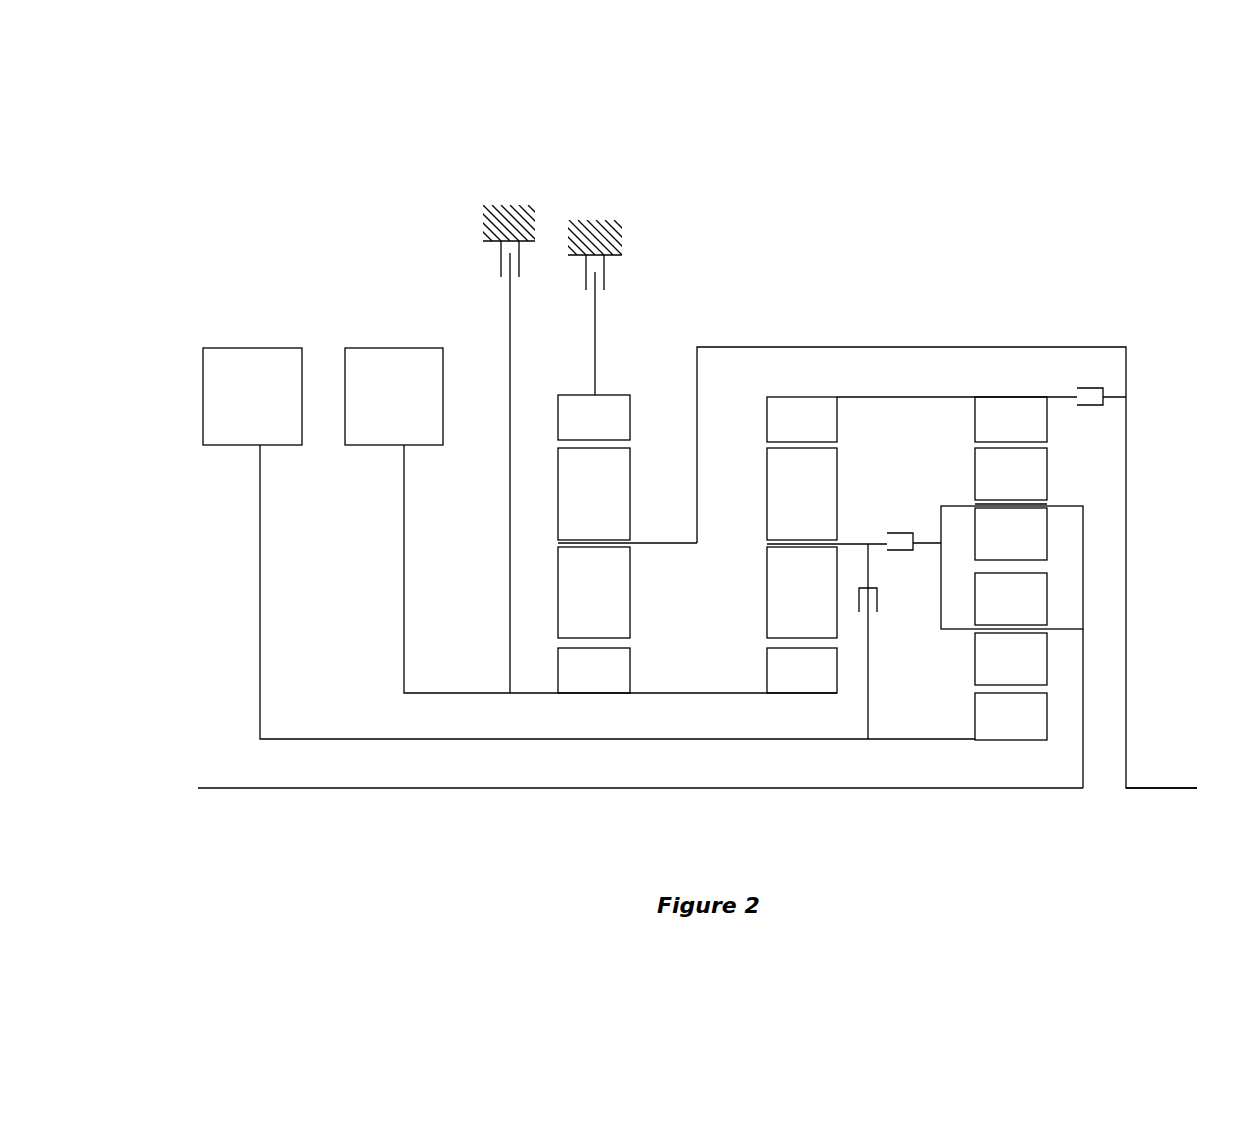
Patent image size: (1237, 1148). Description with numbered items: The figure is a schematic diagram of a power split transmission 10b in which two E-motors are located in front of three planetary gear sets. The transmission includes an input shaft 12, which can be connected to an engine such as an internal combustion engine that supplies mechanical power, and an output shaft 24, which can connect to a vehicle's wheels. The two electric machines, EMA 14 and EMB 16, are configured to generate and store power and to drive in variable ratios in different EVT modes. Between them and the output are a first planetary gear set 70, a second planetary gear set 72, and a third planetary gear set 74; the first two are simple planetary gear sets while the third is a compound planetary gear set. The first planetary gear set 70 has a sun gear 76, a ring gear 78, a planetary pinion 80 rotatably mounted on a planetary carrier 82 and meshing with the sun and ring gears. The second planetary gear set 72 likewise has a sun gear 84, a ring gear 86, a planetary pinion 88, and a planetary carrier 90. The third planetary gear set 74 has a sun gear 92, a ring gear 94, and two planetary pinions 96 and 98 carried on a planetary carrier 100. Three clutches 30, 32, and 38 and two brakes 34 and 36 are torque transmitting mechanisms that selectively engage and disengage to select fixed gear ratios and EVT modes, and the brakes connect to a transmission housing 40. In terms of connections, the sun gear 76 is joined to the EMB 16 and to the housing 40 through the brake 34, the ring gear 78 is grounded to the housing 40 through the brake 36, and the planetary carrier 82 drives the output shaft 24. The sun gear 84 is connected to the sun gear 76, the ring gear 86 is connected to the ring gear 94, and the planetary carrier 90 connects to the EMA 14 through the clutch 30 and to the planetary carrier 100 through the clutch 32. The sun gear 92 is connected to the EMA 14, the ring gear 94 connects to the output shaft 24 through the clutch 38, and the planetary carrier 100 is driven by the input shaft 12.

The power split transmission 10b is at (741, 168).
The input shaft 12 is at (252, 790).
The EMA 14 is at (260, 347).
The EMB 16 is at (393, 347).
The output shaft 24 is at (1160, 790).
The clutch 30 is at (891, 603).
The clutch 32 is at (908, 522).
The brake 34 is at (473, 259).
The brake 36 is at (624, 277).
The clutch 38 is at (1076, 375).
The transmission housing 40 is at (510, 192).
The first planetary gear set 70 is at (634, 496).
The second planetary gear set 72 is at (898, 479).
The third planetary gear set 74 is at (1034, 525).
The sun gear 76 is at (630, 670).
The ring gear 78 is at (630, 418).
The planetary pinion 80 is at (630, 560).
The planetary carrier 82 is at (652, 543).
The sun gear 84 is at (767, 670).
The ring gear 86 is at (767, 418).
The planetary pinion 88 is at (767, 500).
The planetary carrier 90 is at (862, 543).
The sun gear 92 is at (975, 715).
The ring gear 94 is at (975, 418).
The planetary pinion 96 is at (1047, 483).
The planetary pinion 98 is at (975, 578).
The planetary carrier 100 is at (1083, 570).